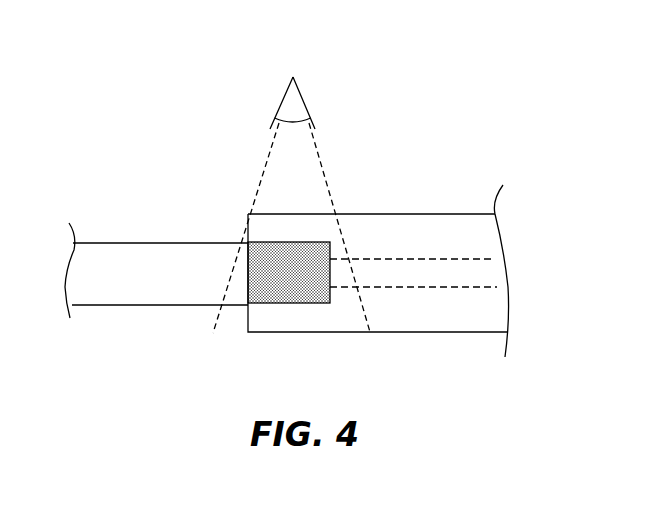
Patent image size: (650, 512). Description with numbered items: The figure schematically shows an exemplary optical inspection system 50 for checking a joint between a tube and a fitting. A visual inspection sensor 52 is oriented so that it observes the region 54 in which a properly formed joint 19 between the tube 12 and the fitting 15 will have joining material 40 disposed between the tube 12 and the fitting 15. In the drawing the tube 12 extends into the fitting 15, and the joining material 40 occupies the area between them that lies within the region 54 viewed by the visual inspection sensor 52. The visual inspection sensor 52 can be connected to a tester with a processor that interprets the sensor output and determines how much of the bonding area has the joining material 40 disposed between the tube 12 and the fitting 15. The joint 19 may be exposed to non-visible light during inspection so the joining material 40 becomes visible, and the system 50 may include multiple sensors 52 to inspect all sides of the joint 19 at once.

The optical inspection system 50 is at (344, 42).
The visual inspection sensor 52 is at (290, 105).
The region 54 is at (270, 155).
The joint 19 is at (212, 183).
The tube 12 is at (197, 247).
The fitting 15 is at (410, 214).
The joining material 40 is at (305, 249).